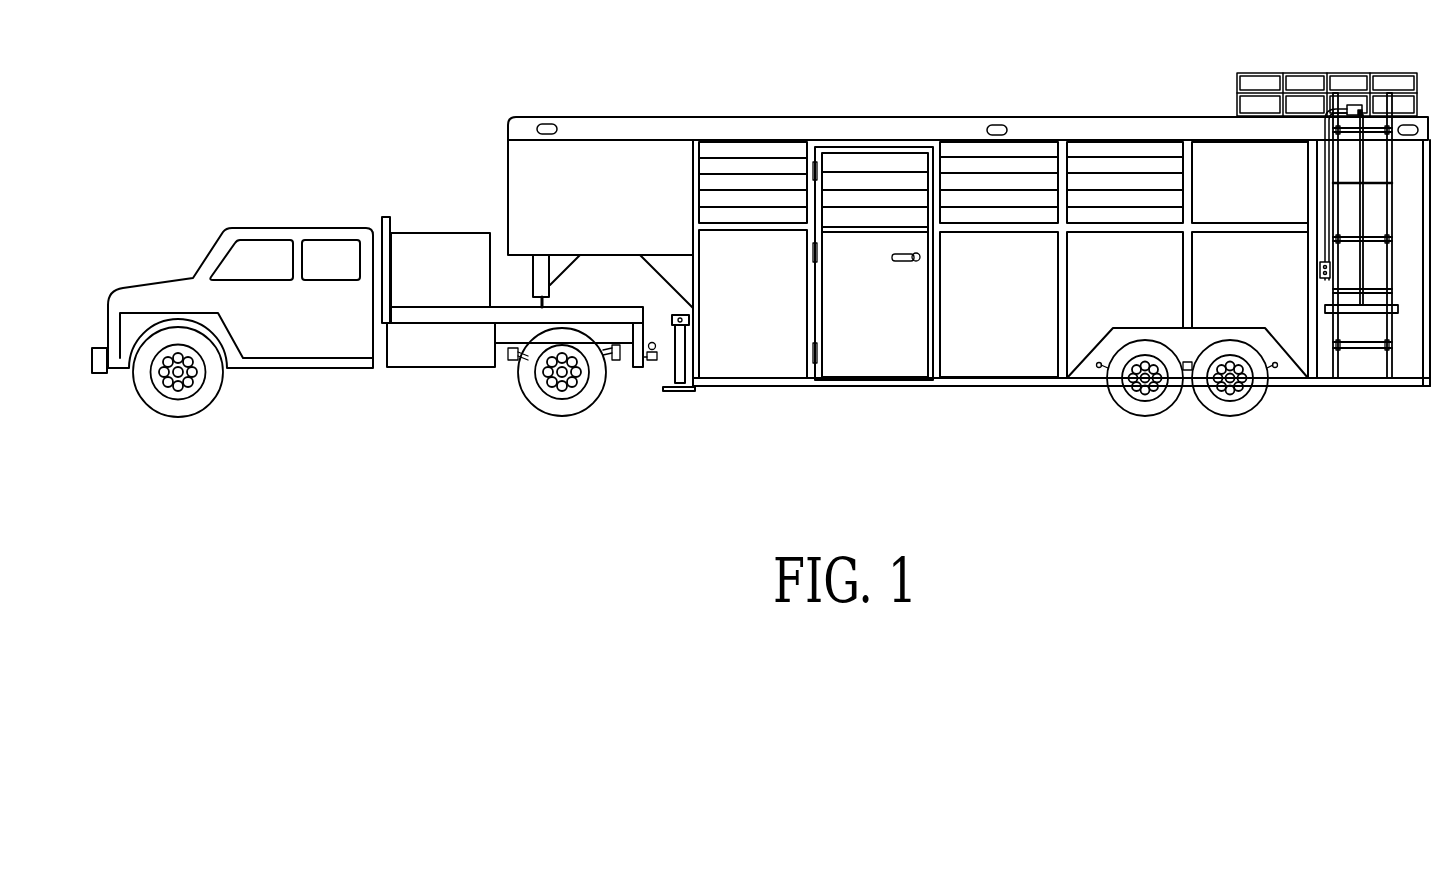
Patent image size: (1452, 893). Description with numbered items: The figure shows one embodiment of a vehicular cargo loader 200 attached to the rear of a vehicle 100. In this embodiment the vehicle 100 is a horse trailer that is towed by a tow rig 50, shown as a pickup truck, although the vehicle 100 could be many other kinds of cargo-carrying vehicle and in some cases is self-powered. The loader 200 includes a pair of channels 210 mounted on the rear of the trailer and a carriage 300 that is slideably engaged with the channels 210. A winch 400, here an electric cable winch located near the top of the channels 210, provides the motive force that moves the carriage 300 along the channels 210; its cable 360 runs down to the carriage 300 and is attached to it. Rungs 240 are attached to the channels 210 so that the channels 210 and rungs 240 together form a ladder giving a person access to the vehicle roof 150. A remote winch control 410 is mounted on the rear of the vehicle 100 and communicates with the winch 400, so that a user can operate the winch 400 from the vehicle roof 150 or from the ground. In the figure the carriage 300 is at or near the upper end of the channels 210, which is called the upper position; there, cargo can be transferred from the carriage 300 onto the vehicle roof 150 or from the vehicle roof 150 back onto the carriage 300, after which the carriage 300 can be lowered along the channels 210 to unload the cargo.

The tow rig 50 is at (283, 234).
The vehicle 100 is at (925, 122).
The vehicle roof 150 is at (1098, 122).
The vehicular cargo loader 200 is at (1327, 276).
The channels 210 is at (1337, 367).
The rungs 240 is at (1350, 183).
The carriage 300 is at (1327, 310).
The cable 360 is at (1360, 203).
The winch 400 is at (1358, 105).
The remote winch control 410 is at (1320, 273).